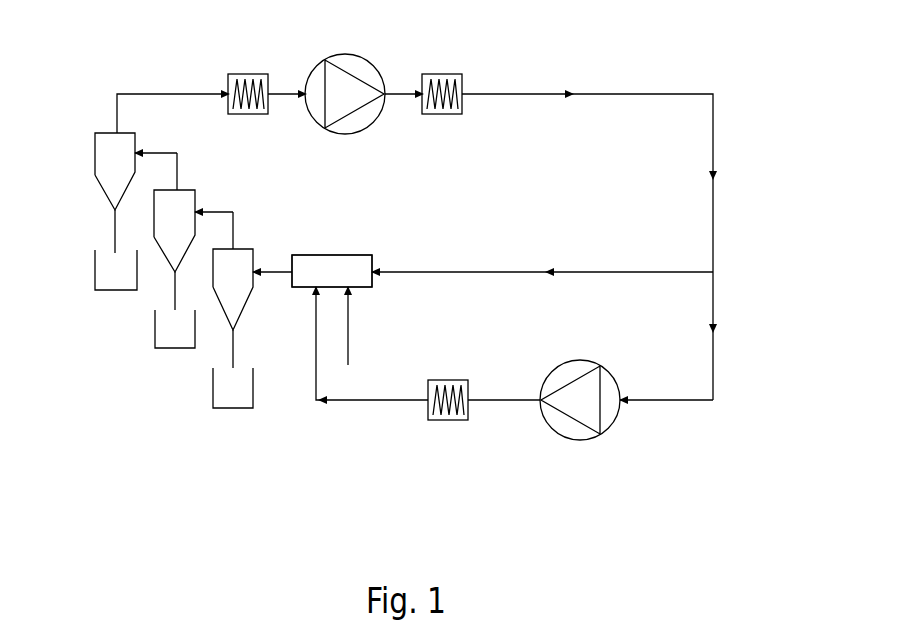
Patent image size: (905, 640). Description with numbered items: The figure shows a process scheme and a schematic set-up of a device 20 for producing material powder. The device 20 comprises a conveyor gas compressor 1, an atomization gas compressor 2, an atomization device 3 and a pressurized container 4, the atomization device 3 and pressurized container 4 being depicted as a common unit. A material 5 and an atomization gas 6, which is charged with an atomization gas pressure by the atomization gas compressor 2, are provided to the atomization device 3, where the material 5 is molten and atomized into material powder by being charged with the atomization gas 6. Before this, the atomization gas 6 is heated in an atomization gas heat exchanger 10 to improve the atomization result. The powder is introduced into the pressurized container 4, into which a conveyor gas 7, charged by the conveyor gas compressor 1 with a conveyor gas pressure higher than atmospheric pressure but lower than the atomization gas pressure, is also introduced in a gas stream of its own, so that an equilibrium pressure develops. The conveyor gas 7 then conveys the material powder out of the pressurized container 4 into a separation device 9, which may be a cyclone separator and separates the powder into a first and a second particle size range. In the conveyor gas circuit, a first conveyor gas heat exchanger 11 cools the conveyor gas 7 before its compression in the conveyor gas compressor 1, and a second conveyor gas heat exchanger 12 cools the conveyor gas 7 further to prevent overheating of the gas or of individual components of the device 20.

The conveyor gas compressor 1 is at (325, 62).
The atomization gas compressor 2 is at (552, 372).
The atomization device 3 is at (342, 255).
The pressurized container 4 is at (332, 271).
The material 5 is at (348, 335).
The atomization gas 6 is at (375, 405).
The conveyor gas 7 is at (234, 229).
The separation device 9 is at (225, 248).
The atomization gas heat exchanger 10 is at (438, 422).
The first conveyor gas heat exchanger 11 is at (240, 74).
The second conveyor gas heat exchanger 12 is at (442, 74).
The device 20 is at (95, 413).